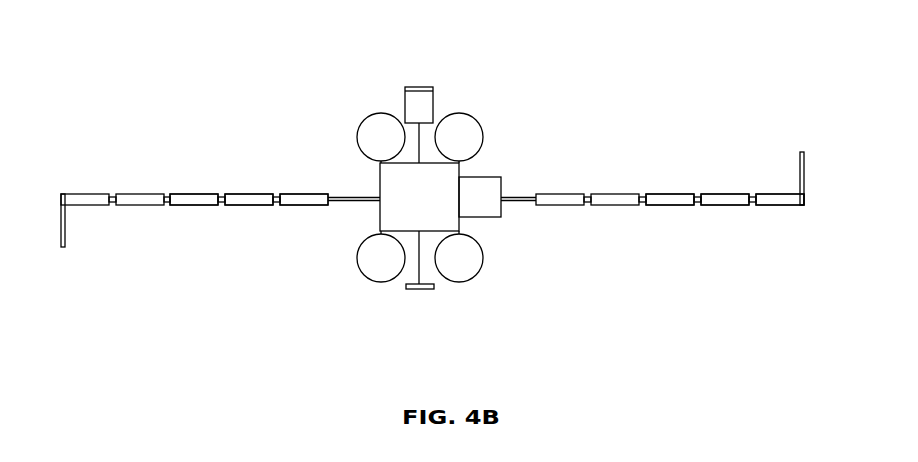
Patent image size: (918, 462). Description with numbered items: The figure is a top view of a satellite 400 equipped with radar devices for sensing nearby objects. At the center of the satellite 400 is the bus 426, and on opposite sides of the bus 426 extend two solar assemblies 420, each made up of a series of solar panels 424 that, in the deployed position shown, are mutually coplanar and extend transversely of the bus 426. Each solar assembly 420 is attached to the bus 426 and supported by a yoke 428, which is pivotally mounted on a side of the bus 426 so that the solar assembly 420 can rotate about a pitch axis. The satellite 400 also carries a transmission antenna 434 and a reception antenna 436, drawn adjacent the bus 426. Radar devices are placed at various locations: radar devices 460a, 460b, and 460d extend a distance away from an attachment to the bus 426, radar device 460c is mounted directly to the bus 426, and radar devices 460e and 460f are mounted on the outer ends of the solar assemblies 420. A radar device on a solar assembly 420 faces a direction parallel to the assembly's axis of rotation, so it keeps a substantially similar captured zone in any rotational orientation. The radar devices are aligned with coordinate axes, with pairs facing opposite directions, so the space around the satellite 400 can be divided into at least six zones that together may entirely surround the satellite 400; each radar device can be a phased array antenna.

The satellite 400 is at (354, 82).
The solar assembly 420 is at (241, 193).
The solar panel 424 is at (300, 200).
The bus 426 is at (462, 167).
The yoke 428 is at (352, 193).
The transmission antenna 434 is at (366, 277).
The reception antenna 436 is at (472, 279).
The radar device 460a is at (412, 290).
The radar device 460b is at (421, 86).
The radar device 460c is at (490, 177).
The radar device 460d is at (430, 102).
The radar device 460e is at (64, 247).
The radar device 460f is at (800, 165).